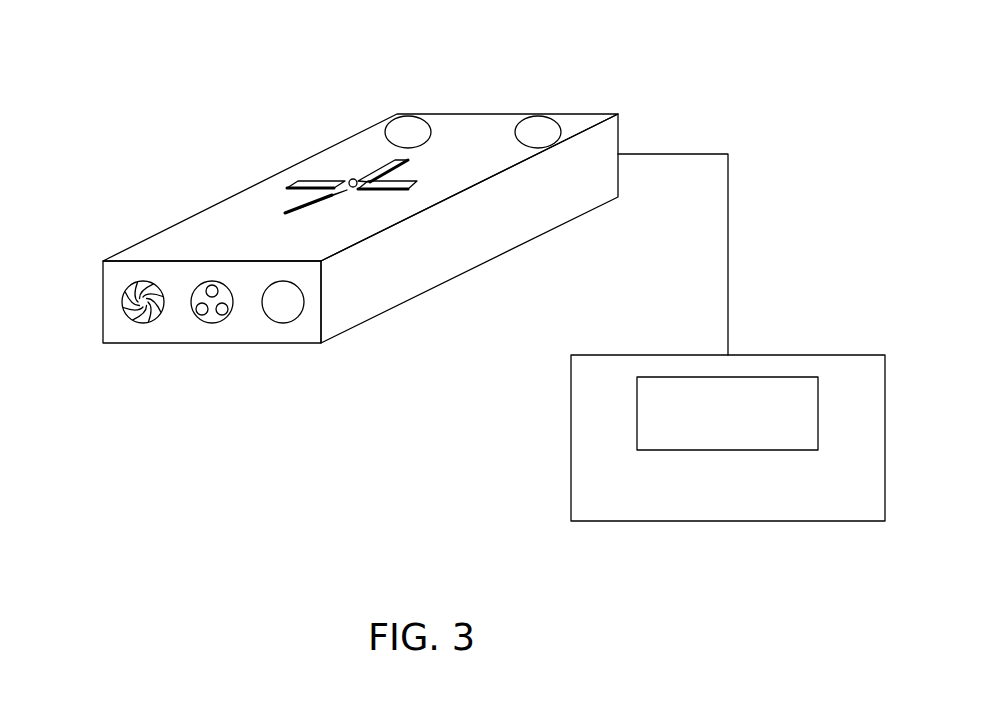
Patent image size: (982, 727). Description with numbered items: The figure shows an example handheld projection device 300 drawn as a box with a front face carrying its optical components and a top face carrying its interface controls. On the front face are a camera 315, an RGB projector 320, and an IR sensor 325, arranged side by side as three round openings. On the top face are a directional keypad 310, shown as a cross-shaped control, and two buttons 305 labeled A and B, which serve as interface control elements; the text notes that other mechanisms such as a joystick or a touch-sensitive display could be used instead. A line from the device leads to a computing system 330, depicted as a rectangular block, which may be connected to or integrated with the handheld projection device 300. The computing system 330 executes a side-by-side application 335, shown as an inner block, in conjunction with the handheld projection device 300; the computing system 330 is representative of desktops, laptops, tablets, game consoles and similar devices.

The handheld projection device 300 is at (219, 95).
The buttons 305 is at (580, 75).
The directional keypad 310 is at (330, 183).
The camera 315 is at (147, 322).
The RGB projector 320 is at (213, 323).
The IR sensor 325 is at (282, 323).
The computing system 330 is at (657, 355).
The side-by-side application 335 is at (818, 402).